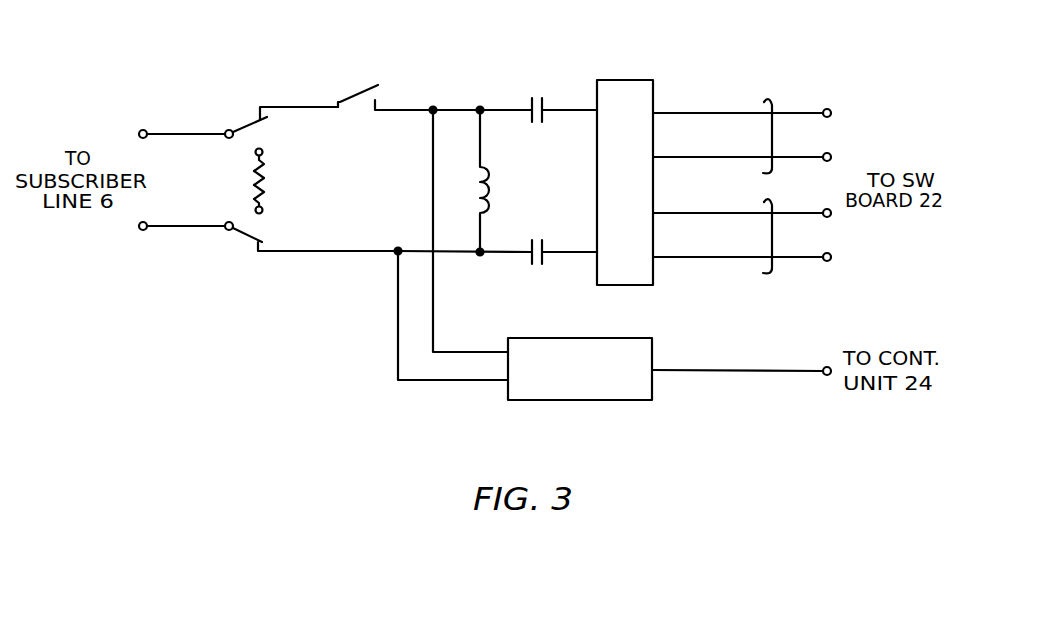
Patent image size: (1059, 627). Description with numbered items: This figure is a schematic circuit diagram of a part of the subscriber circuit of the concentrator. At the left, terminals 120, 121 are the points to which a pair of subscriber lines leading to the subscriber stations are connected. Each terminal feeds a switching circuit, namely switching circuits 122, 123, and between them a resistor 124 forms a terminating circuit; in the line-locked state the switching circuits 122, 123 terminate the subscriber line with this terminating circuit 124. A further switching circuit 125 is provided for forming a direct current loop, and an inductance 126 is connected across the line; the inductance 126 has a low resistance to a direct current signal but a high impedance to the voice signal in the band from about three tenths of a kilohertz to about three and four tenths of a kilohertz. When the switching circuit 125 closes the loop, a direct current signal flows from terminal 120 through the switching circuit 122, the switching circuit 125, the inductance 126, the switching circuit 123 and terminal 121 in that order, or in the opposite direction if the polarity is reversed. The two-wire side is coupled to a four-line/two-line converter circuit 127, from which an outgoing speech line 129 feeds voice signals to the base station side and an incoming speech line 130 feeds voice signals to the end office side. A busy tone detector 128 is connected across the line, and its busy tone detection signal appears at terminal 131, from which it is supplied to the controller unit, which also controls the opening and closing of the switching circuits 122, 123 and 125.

The terminal 120 is at (141, 130).
The terminal 121 is at (140, 230).
The switching circuit 122 is at (245, 123).
The switching circuit 123 is at (253, 238).
The resistor 124 is at (266, 163).
The switching circuit 125 is at (363, 80).
The inductance 126 is at (488, 193).
The 4-line/2-line converter circuit 127 is at (607, 80).
The busy tone detector 128 is at (562, 401).
The outgoing speech line 129 is at (763, 173).
The incoming speech line 130 is at (763, 273).
The terminal 131 is at (822, 366).